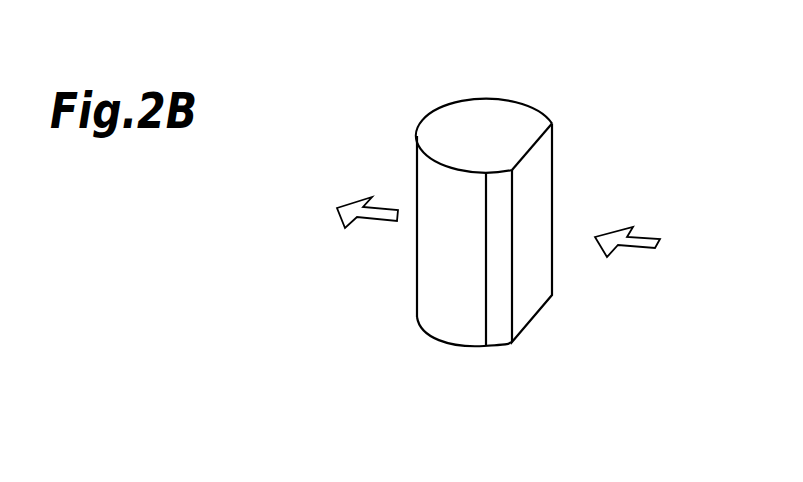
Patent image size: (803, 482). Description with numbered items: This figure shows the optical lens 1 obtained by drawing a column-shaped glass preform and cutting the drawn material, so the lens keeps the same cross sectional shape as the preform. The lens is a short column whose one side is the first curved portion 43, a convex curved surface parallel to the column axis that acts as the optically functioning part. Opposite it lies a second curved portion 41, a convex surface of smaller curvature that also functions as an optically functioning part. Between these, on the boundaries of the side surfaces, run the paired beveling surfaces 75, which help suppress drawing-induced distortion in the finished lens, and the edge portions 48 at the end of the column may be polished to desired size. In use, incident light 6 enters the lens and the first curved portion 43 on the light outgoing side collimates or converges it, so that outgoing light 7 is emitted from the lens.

The optical lens 1 is at (486, 213).
The edge portions 48 is at (497, 120).
The second curved portion 41 is at (535, 188).
The first curved portion 43 is at (418, 280).
The paired beveling surfaces 75 is at (497, 325).
The outgoing light 7 is at (361, 200).
The incident light 6 is at (647, 240).